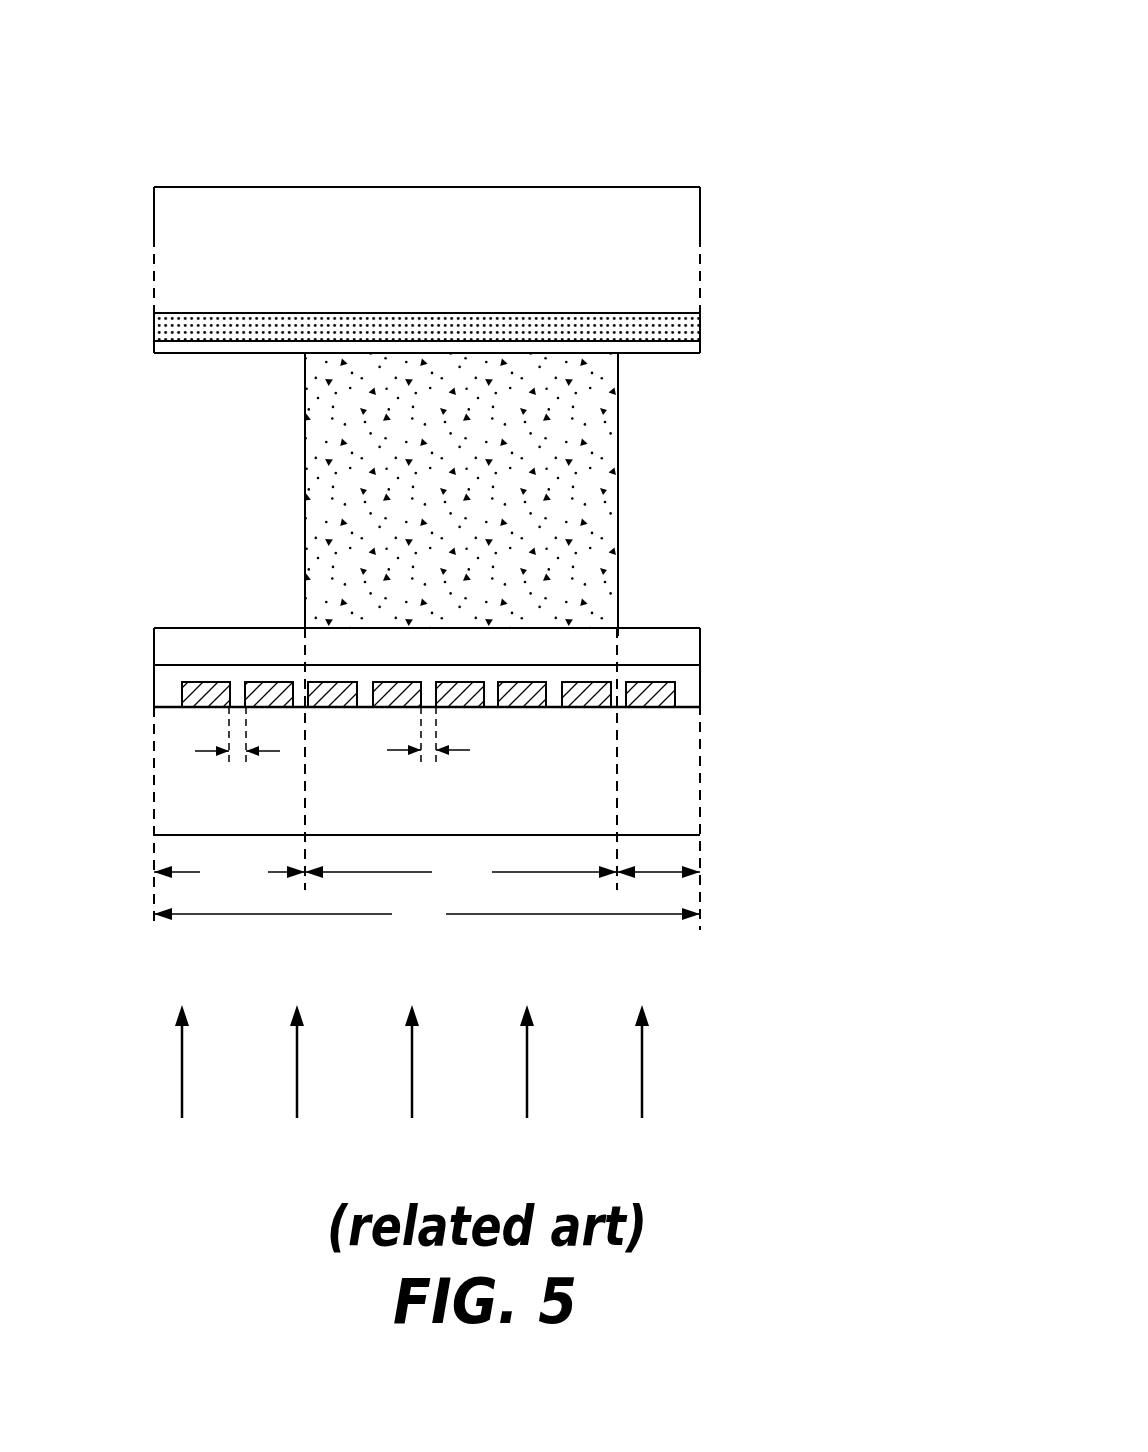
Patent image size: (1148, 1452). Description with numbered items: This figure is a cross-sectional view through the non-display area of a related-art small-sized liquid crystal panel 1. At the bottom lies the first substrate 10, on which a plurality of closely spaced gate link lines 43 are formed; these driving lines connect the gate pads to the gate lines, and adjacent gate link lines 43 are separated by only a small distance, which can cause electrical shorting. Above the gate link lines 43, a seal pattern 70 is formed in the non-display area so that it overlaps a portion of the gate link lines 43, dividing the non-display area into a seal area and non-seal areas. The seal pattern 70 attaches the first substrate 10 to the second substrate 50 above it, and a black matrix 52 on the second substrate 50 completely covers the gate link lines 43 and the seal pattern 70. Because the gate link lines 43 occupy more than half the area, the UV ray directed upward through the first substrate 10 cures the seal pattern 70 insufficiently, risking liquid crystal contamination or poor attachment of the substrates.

The small-sized liquid crystal panel 1 is at (622, 132).
The first substrate 10 is at (689, 802).
The gate link lines 43 is at (207, 690).
The second substrate 50 is at (689, 272).
The black matrix 52 is at (682, 326).
The seal pattern 70 is at (608, 515).